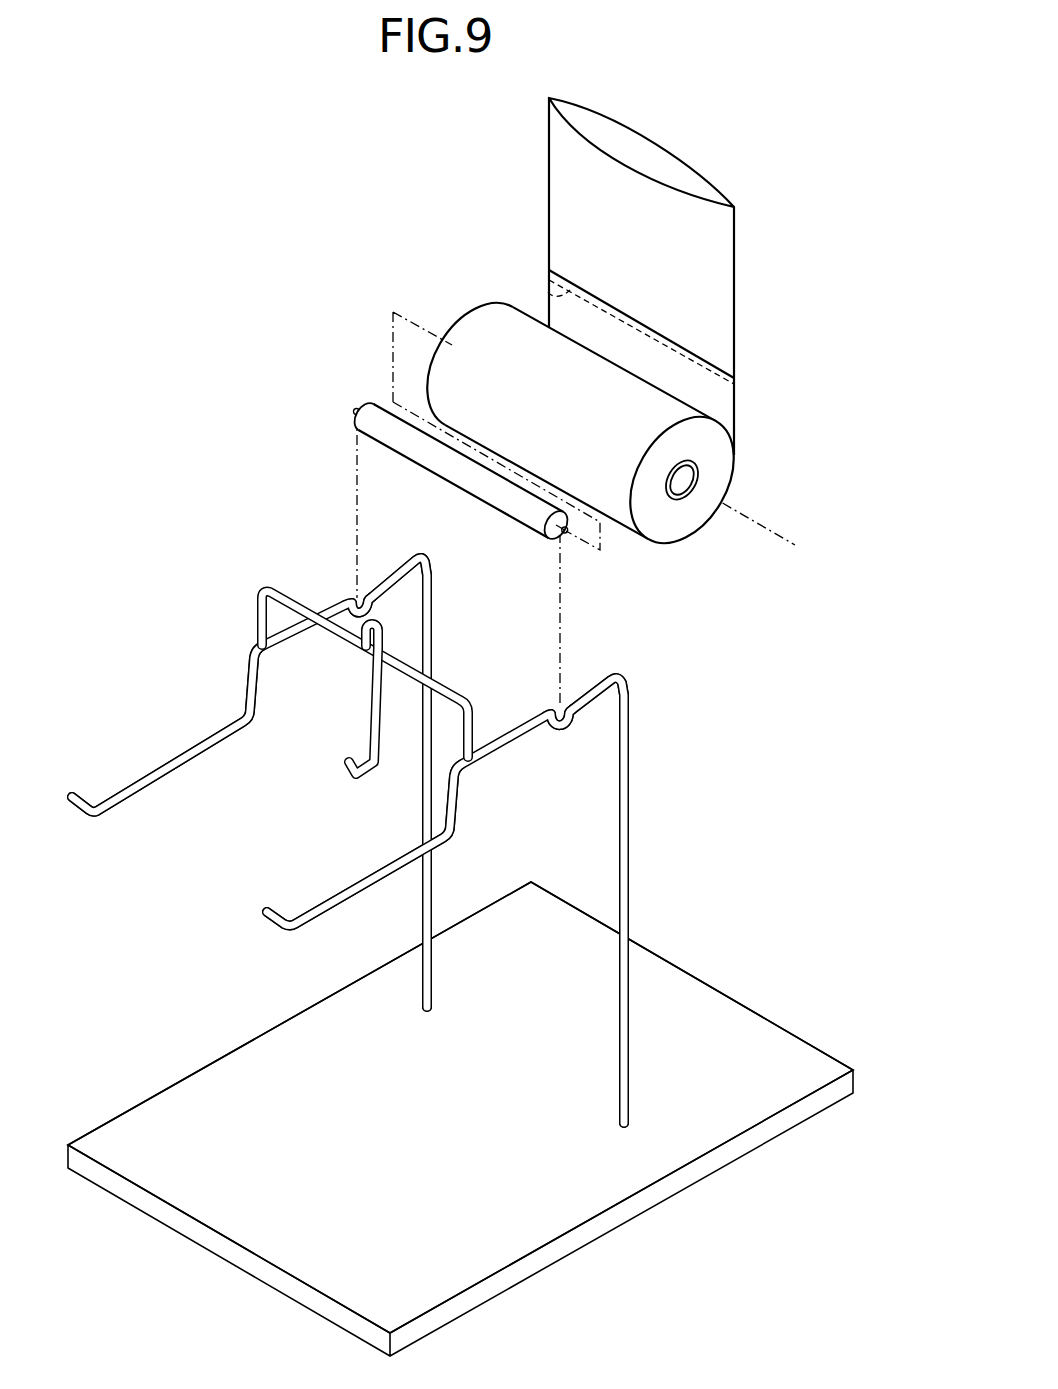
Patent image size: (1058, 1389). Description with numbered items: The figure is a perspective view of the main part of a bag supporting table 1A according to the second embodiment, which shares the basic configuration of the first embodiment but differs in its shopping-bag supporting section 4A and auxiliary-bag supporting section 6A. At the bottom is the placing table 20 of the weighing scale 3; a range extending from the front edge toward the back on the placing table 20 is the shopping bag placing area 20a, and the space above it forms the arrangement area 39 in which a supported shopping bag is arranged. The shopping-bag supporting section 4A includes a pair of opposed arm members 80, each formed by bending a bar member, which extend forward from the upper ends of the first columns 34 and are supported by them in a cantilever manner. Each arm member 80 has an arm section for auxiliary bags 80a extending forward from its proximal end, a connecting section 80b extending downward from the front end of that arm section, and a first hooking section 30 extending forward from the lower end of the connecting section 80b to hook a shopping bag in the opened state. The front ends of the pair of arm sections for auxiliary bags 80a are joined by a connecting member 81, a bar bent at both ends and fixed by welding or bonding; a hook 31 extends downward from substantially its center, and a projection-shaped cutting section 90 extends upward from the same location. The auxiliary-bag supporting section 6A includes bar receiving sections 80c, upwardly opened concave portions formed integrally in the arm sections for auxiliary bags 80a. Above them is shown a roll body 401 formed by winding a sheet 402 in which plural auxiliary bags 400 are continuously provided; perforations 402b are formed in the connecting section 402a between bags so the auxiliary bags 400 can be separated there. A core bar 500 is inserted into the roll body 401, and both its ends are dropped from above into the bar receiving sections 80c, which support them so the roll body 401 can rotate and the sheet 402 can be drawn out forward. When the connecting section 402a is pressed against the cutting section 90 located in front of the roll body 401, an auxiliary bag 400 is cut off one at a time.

The bag supporting table 1A is at (118, 545).
The weighing scale 3 is at (90, 1130).
The shopping-bag supporting section 4A is at (112, 775).
The auxiliary-bag supporting section 6A is at (584, 722).
The placing table 20 is at (133, 1112).
The shopping bag placing area 20a is at (265, 1100).
The first hooking sections 30 is at (165, 779).
The hook 31 is at (380, 764).
The first columns 34 is at (432, 661).
The arrangement area 39 is at (272, 740).
The arm members 80 is at (213, 730).
The arm sections for auxiliary bags 80a is at (396, 562).
The connecting sections 80b is at (247, 678).
The bar receiving sections 80c is at (375, 604).
The connecting member 81 is at (288, 592).
The cutting section 90 is at (387, 625).
The auxiliary bags 400 is at (735, 272).
The roll body 401 is at (690, 541).
The sheet 402 is at (735, 343).
The connecting section 402a is at (735, 384).
The perforations 402b is at (548, 292).
The core bar 500 is at (492, 507).